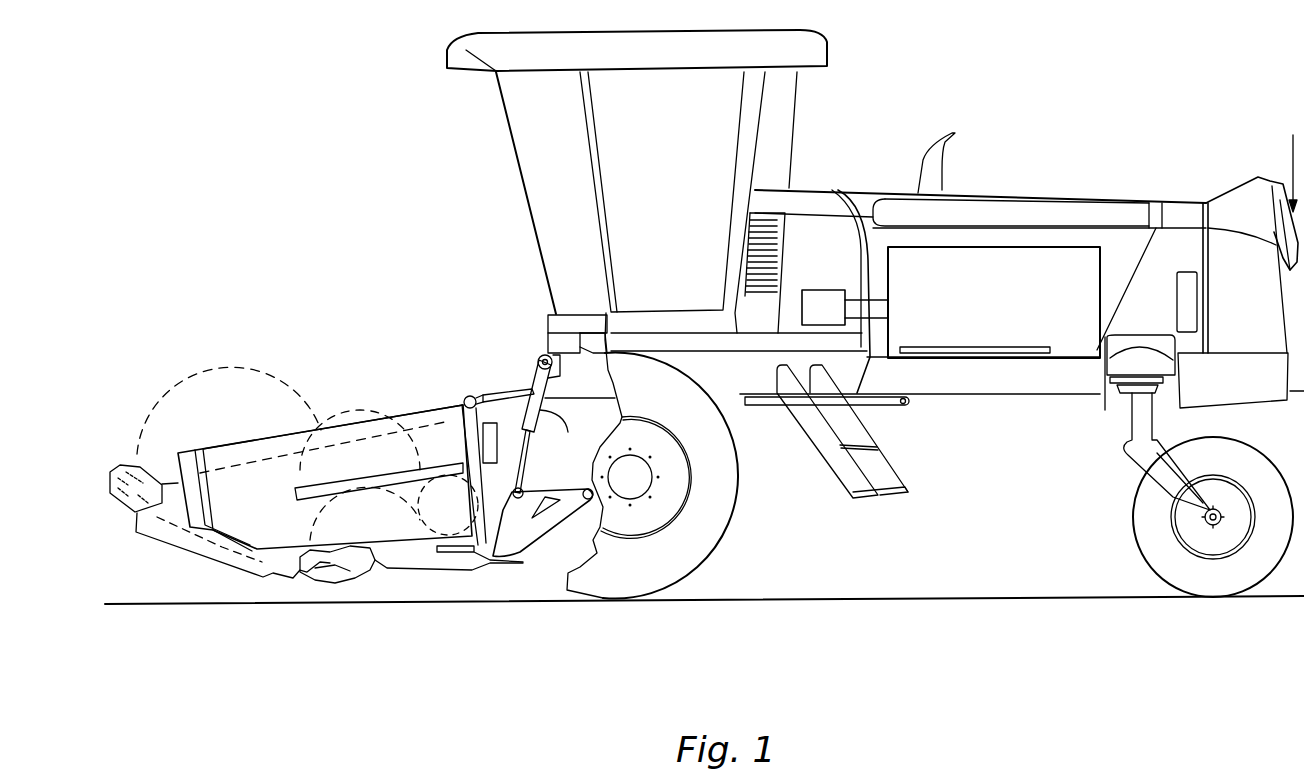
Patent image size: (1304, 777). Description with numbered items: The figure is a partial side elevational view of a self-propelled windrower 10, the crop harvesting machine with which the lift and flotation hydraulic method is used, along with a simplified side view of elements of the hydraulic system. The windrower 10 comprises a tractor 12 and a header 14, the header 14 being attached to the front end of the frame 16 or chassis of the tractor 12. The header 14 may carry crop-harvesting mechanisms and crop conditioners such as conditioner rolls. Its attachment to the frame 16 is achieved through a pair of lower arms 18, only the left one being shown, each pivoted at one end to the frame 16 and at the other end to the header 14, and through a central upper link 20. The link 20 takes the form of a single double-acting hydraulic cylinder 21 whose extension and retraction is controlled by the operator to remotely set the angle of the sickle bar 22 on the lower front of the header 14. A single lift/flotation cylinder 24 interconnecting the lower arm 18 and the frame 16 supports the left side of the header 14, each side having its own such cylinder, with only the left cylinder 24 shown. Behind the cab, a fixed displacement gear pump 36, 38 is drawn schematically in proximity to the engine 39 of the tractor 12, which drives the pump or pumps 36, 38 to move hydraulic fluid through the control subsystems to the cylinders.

The self-propelled windrower 10 is at (353, 131).
The tractor 12 is at (1127, 200).
The header 14 is at (358, 421).
The frame 16 is at (610, 333).
The lower arm 18 is at (483, 567).
The central upper link 20 is at (473, 386).
The double-acting hydraulic cylinder 21 is at (512, 387).
The sickle bar 22 is at (327, 583).
The lift/flotation cylinder 24 is at (546, 464).
The fixed displacement gear pump 36 is at (822, 290).
The fixed displacement gear pump 38 is at (870, 203).
The engine 39 is at (1017, 247).